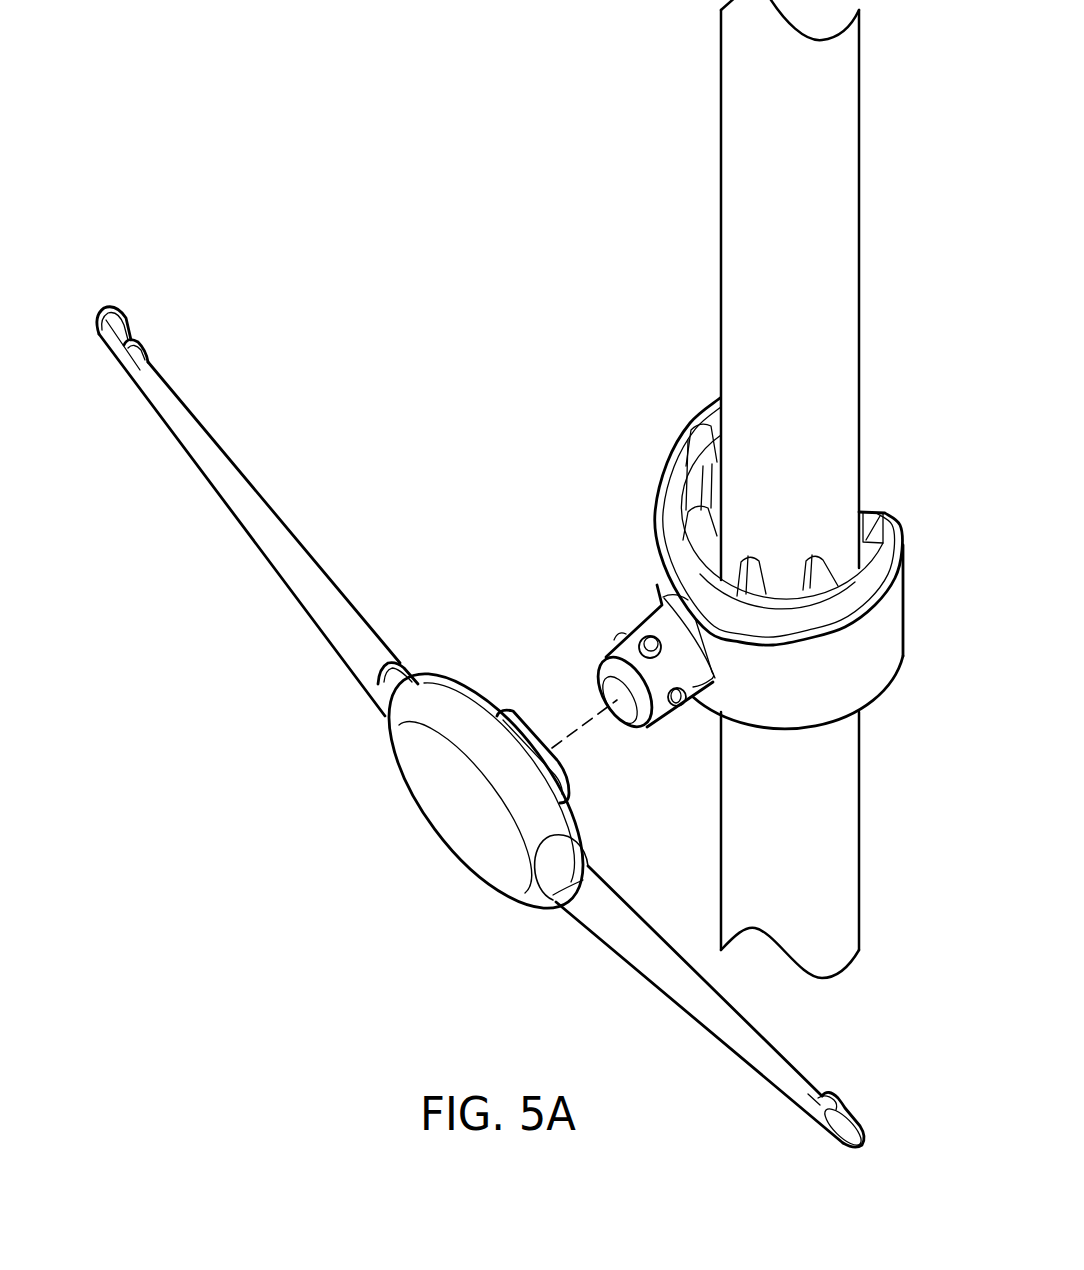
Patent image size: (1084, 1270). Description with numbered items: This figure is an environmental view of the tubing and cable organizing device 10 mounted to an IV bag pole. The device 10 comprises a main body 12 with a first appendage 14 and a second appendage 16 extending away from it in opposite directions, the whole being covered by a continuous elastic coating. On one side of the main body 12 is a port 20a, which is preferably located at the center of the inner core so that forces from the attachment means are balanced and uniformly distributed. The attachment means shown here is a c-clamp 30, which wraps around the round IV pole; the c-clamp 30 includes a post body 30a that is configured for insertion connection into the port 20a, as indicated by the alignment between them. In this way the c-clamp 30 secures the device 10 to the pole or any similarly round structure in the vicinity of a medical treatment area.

The tubing and cable organizing device 10 is at (398, 861).
The main body 12 is at (493, 887).
The first appendage 14 is at (672, 997).
The second appendage 16 is at (263, 553).
The port 20a is at (530, 716).
The c-clamp 30 is at (682, 434).
The post body 30a is at (657, 635).